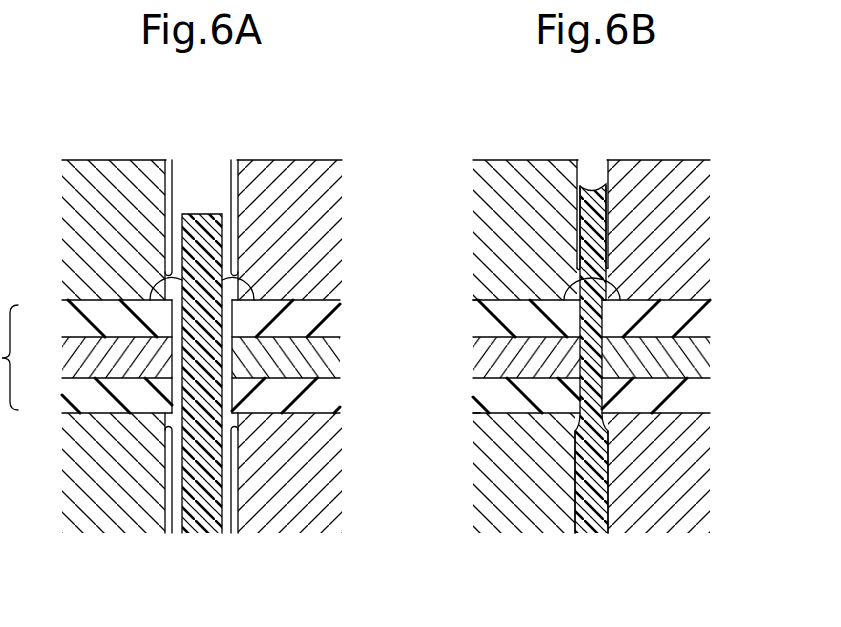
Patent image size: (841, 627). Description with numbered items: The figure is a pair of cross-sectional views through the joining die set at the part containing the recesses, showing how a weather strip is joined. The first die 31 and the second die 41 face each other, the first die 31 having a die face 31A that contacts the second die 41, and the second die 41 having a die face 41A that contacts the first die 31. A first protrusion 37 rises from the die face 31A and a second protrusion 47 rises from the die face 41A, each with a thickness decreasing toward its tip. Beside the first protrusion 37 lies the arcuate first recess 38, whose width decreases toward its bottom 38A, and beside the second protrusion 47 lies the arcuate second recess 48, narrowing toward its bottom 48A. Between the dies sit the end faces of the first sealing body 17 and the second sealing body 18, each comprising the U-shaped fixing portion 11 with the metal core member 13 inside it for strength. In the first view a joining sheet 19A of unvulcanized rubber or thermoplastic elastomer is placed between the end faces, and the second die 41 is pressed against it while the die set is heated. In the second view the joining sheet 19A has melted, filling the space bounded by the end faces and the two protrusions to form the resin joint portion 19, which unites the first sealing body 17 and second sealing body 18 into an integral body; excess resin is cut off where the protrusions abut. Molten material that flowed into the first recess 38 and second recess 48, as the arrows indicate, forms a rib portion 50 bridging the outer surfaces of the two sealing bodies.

In FIG. 6A, the fixing portion 11 is at (68, 322).
In FIG. 6B, the fixing portion 11 is at (485, 317).
In FIG. 6A, the core member 13 is at (68, 360).
In FIG. 6B, the core member 13 is at (485, 355).
In FIG. 6B, the first sealing body 17 is at (408, 202).
In FIG. 6A, the second sealing body 18 is at (383, 303).
In FIG. 6B, the second sealing body 18 is at (755, 305).
In FIG. 6B, the resin joint portion 19 is at (603, 390).
In FIG. 6A, the joining sheet 19A is at (197, 516).
In FIG. 6A, the first die 31 is at (100, 160).
In FIG. 6B, the first die 31 is at (514, 160).
In FIG. 6A, the die face 31A is at (172, 158).
In FIG. 6B, the die face 31A is at (581, 180).
In FIG. 6A, the first protrusion 37 is at (171, 236).
In FIG. 6B, the first protrusion 37 is at (578, 257).
In FIG. 6A, the first recess 38 is at (171, 286).
In FIG. 6B, the first recess 38 is at (574, 293).
In FIG. 6A, the bottom 38A is at (152, 302).
In FIG. 6A, the second die 41 is at (299, 160).
In FIG. 6B, the second die 41 is at (668, 160).
In FIG. 6A, the die face 41A is at (236, 163).
In FIG. 6B, the die face 41A is at (608, 180).
In FIG. 6A, the second protrusion 47 is at (233, 236).
In FIG. 6B, the second protrusion 47 is at (608, 252).
In FIG. 6A, the second recess 48 is at (233, 286).
In FIG. 6B, the second recess 48 is at (612, 290).
In FIG. 6A, the bottom 48A is at (252, 302).
In FIG. 6B, the rib portion 50 is at (643, 306).